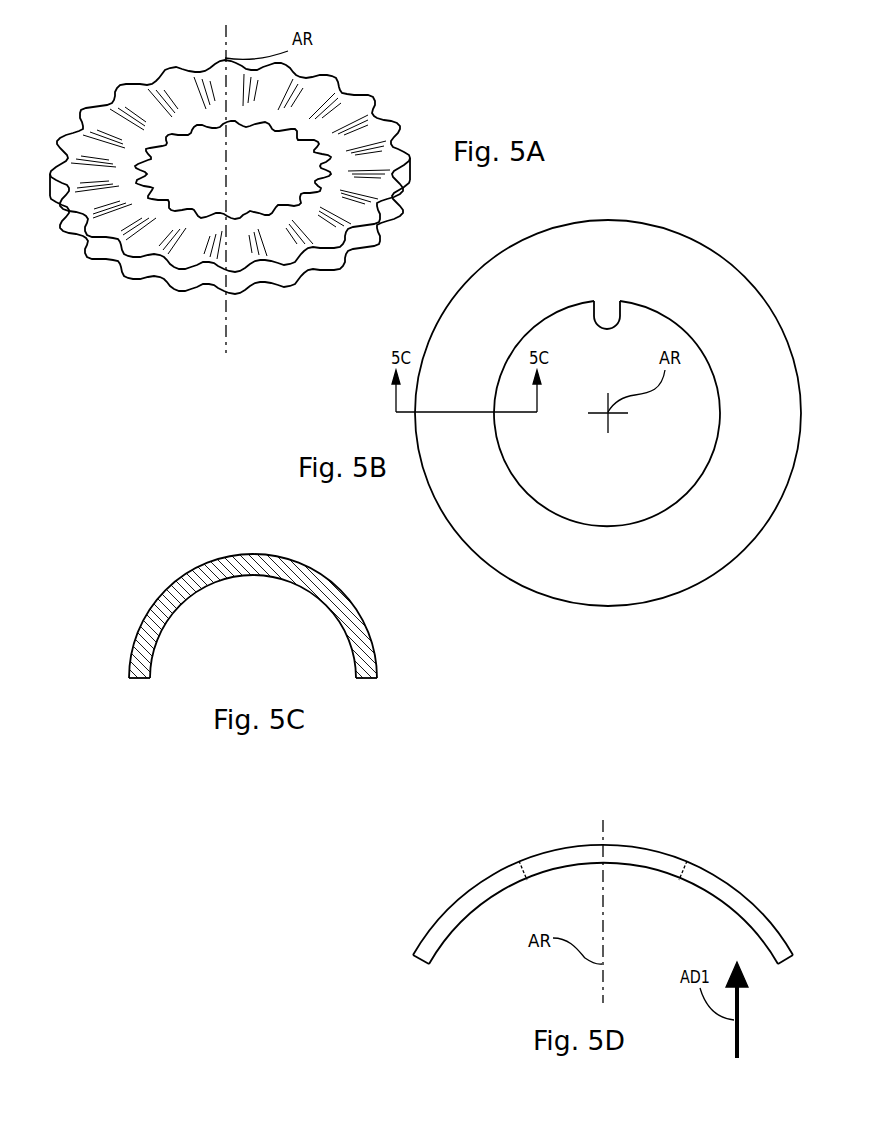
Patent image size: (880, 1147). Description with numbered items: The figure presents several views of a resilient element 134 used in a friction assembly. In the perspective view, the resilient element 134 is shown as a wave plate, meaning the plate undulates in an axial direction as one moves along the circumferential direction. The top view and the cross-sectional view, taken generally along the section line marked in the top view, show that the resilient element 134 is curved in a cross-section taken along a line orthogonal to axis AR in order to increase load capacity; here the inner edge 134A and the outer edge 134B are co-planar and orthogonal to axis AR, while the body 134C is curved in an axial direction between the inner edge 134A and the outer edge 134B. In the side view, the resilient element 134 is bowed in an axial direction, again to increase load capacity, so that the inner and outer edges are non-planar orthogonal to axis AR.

In FIG. 5A, the resilient element 134 is at (349, 65).
In FIG. 5B, the resilient element 134 is at (618, 385).
In FIG. 5C, the resilient element 134 is at (251, 614).
In FIG. 5D, the resilient element 134 is at (561, 850).
In FIG. 5B, the inner edge 134A is at (589, 301).
In FIG. 5C, the inner edge 134A is at (377, 678).
In FIG. 5D, the inner edge 134A is at (522, 862).
In FIG. 5B, the outer edge 134B is at (736, 266).
In FIG. 5C, the outer edge 134B is at (129, 678).
In FIG. 5D, the outer edge 134B is at (410, 957).
In FIG. 5B, the body 134C is at (501, 325).
In FIG. 5C, the body 134C is at (162, 596).
In FIG. 5D, the body 134C is at (455, 902).